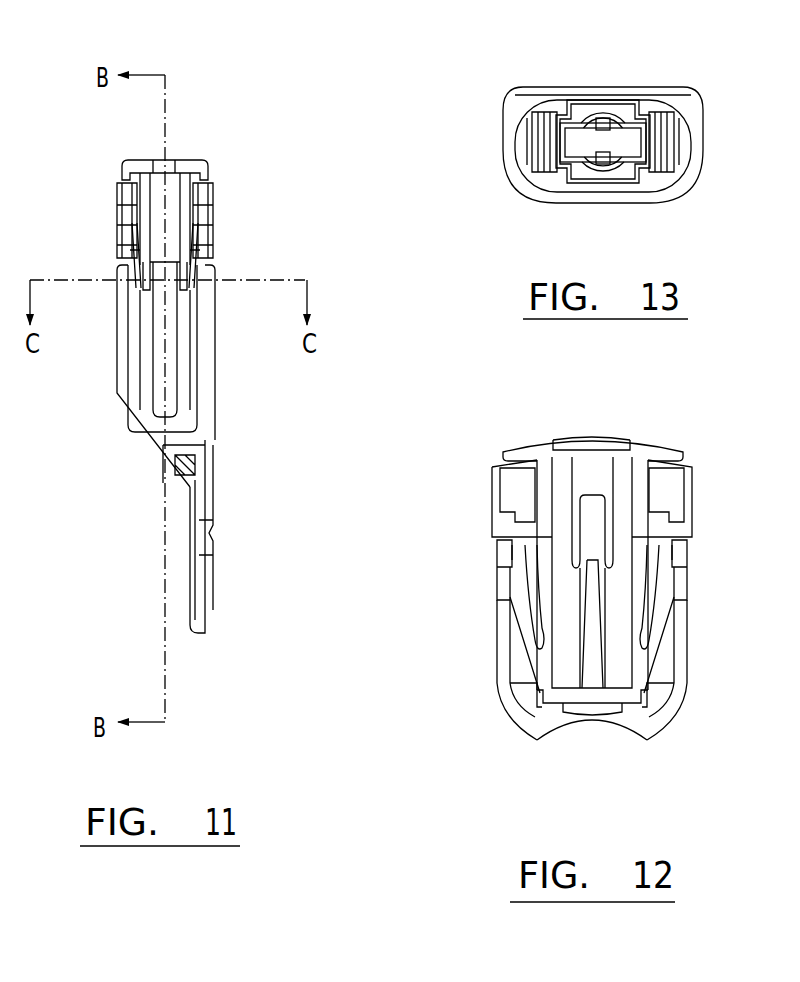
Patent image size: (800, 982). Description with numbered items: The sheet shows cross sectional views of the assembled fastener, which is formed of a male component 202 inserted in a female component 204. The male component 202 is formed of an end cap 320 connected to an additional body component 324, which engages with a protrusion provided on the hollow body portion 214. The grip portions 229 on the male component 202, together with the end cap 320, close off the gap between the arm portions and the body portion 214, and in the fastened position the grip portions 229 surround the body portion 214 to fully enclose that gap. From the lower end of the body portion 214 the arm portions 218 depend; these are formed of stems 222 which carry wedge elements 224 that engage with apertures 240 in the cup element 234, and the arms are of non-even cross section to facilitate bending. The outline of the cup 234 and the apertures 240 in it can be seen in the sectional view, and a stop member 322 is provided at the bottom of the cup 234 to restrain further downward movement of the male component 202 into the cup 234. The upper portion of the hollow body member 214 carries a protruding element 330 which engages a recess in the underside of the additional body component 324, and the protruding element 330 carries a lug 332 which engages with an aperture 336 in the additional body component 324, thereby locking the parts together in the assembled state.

In FIG. 11, the male component 202 is at (188, 148).
In FIG. 12, the male component 202 is at (508, 438).
In FIG. 11, the female component 204 is at (224, 522).
In FIG. 12, the hollow body portion 214 is at (604, 618).
In FIG. 12, the arm portions 218 is at (662, 675).
In FIG. 12, the stems 222 is at (525, 622).
In FIG. 12, the wedge elements 224 is at (503, 582).
In FIG. 11, the grip portions 229 is at (226, 190).
In FIG. 12, the grip portions 229 is at (498, 478).
In FIG. 12, the cup element 234 is at (688, 668).
In FIG. 12, the apertures 240 is at (690, 594).
In FIG. 12, the end cap 320 is at (668, 452).
In FIG. 12, the stop member 322 is at (643, 712).
In FIG. 12, the additional body component 324 is at (650, 498).
In FIG. 11, the protruding element 330 is at (140, 272).
In FIG. 11, the lug 332 is at (135, 232).
In FIG. 11, the aperture 336 is at (198, 230).